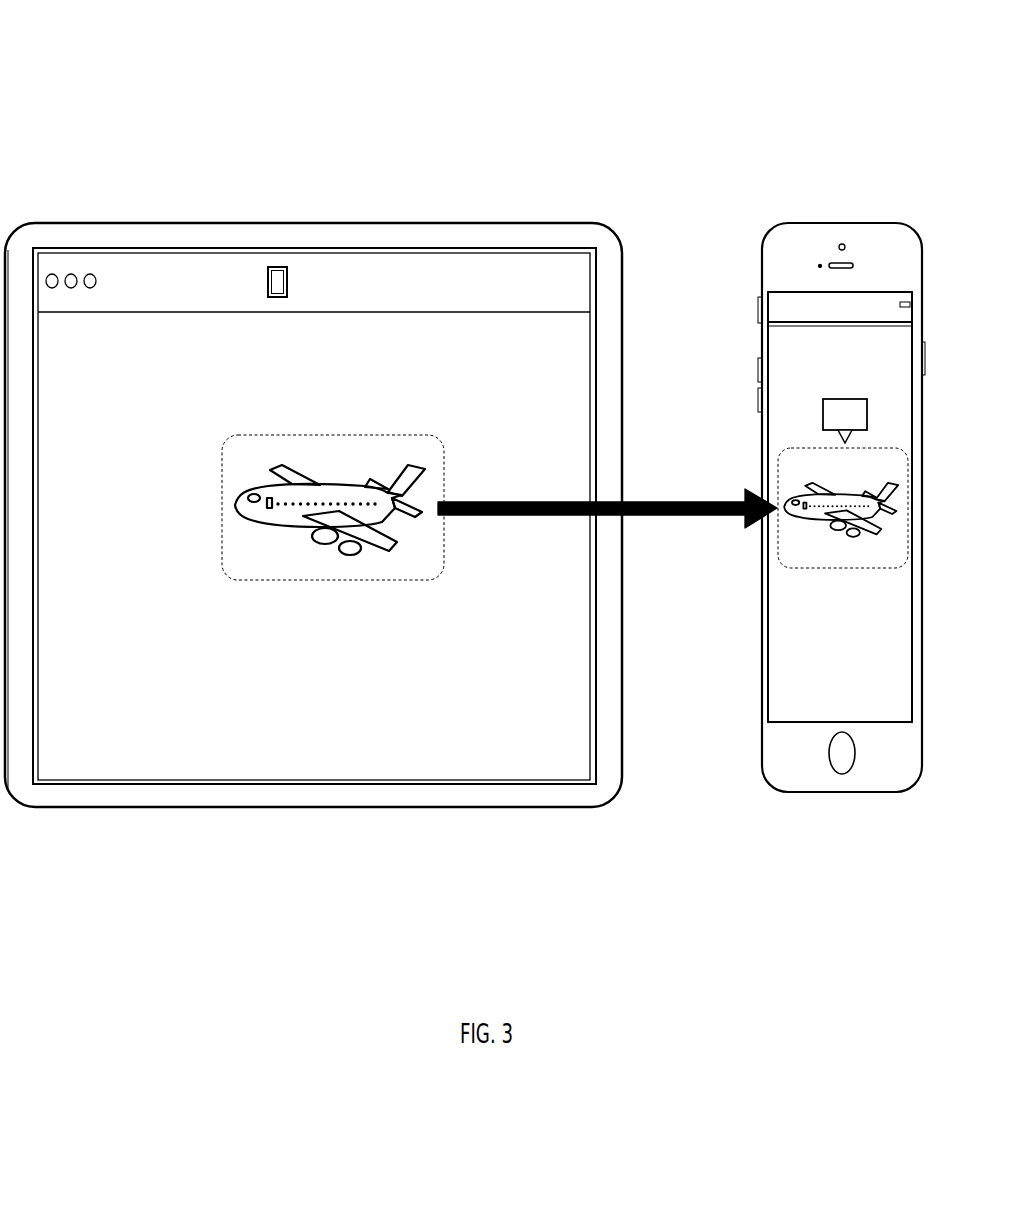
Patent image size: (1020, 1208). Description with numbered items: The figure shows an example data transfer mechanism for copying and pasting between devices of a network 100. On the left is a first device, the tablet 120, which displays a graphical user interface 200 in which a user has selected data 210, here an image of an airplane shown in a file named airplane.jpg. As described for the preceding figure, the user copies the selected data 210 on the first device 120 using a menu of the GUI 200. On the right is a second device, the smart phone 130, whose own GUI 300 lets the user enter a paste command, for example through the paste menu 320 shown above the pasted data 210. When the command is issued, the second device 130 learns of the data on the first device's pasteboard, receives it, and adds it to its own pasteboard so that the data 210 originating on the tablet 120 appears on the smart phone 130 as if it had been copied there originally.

The network 100 is at (465, 491).
The tablet 120 is at (100, 207).
The smart phone 130 is at (825, 208).
The graphical user interface 200 is at (117, 750).
The data 210 is at (248, 580).
The GUI of the second device 300 is at (800, 705).
The paste menu 320 is at (870, 415).